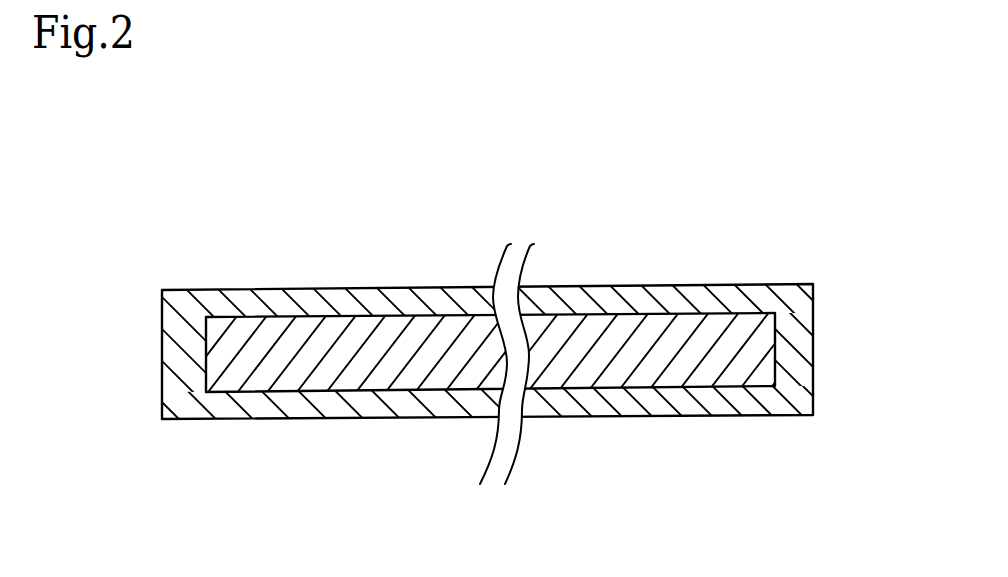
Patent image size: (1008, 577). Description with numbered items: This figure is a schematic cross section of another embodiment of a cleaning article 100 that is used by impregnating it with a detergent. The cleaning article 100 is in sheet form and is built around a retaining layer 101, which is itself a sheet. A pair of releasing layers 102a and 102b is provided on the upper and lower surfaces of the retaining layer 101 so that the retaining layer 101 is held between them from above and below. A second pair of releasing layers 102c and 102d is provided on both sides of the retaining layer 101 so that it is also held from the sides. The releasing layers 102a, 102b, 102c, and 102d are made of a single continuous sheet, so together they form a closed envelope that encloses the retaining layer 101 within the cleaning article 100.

The cleaning article 100 is at (653, 256).
The retaining layer 101 is at (560, 363).
The releasing layer 102a is at (275, 298).
The releasing layer 102b is at (265, 408).
The releasing layer 102c is at (175, 355).
The releasing layer 102d is at (803, 341).